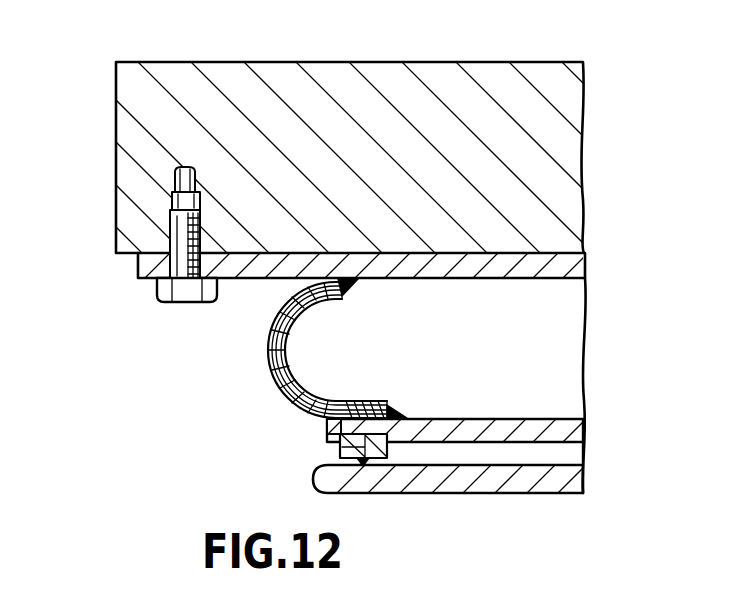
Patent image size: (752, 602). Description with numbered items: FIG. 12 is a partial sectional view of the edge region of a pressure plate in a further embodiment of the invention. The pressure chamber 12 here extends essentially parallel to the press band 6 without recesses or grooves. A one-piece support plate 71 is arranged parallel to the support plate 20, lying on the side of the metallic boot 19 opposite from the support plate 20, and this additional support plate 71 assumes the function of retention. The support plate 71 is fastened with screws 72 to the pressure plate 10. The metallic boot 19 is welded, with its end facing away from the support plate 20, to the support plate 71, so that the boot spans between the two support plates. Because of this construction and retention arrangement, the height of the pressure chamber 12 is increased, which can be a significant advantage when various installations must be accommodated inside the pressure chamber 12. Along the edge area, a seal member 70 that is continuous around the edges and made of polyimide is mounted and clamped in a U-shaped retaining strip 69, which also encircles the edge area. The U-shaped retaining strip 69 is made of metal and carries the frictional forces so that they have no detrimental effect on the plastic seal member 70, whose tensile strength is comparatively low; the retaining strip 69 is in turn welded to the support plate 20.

The pressure plate 10 is at (324, 76).
The support plate 71 is at (568, 265).
The screws 72 is at (175, 225).
The metallic boot 19 is at (273, 375).
The pressure chamber 12 is at (562, 453).
The support plate 20 is at (337, 428).
The U-shaped retaining strip 69 is at (340, 450).
The seal member 70 is at (363, 462).
The press band 6 is at (513, 483).